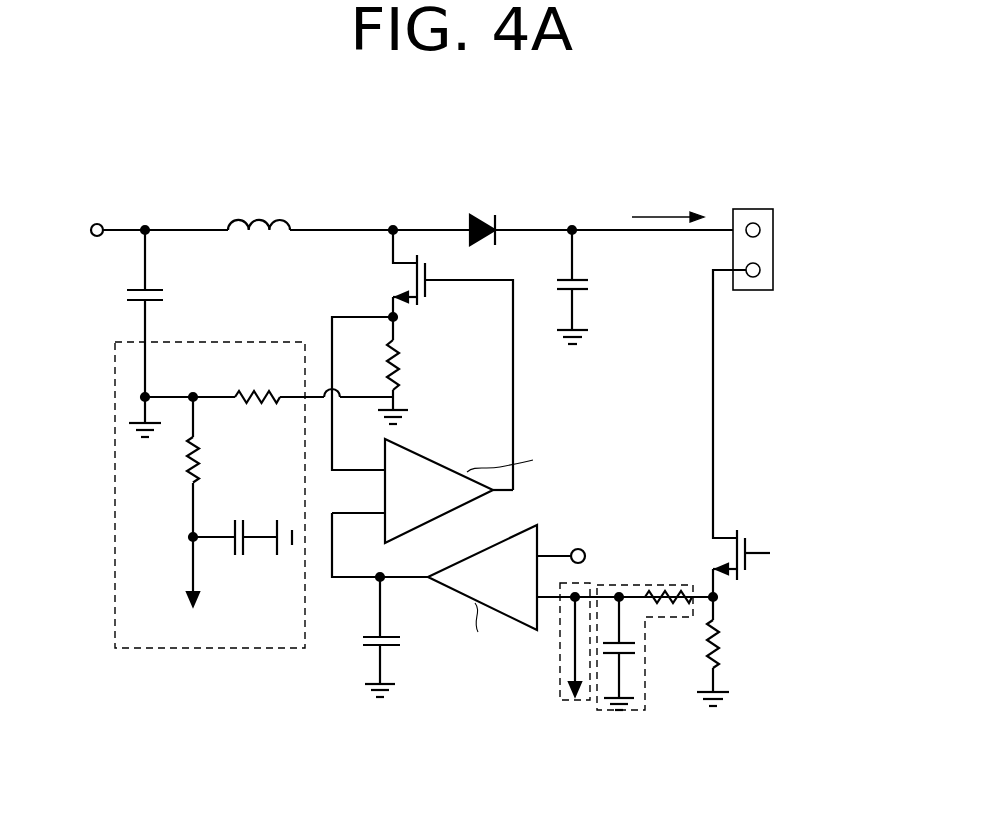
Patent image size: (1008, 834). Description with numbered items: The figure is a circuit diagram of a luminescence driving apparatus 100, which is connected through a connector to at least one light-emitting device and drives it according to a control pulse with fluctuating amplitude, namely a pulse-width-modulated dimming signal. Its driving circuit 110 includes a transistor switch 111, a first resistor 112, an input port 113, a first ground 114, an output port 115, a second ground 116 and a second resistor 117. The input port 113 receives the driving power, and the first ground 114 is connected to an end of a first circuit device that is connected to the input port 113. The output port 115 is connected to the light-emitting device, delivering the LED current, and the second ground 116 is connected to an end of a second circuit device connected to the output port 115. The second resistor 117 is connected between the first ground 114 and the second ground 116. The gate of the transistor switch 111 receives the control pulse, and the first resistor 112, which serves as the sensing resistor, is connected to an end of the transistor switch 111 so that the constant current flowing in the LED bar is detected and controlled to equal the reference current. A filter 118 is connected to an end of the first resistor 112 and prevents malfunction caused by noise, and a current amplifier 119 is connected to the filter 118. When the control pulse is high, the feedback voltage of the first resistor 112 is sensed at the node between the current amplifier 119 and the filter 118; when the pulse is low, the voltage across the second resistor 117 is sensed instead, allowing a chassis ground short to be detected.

The luminescence driving apparatus 100 is at (497, 117).
The driving circuit 110 is at (85, 648).
The transistor switch 111 is at (750, 542).
The first resistor 112 is at (695, 662).
The input port 113 is at (142, 193).
The first ground 114 is at (133, 427).
The output port 115 is at (575, 182).
The second ground 116 is at (407, 407).
The second resistor 117 is at (253, 357).
The filter 118 is at (657, 582).
The current amplifier 119 is at (538, 525).